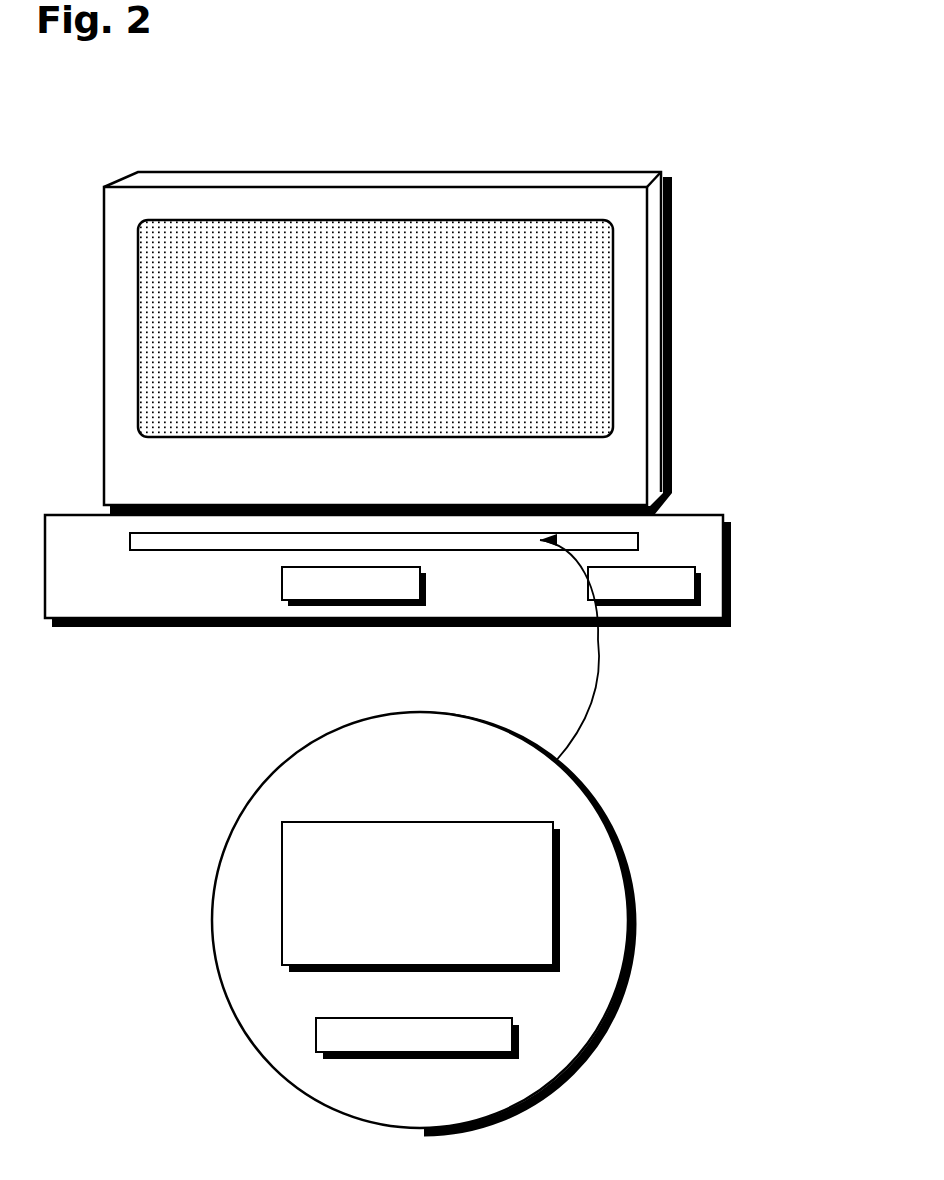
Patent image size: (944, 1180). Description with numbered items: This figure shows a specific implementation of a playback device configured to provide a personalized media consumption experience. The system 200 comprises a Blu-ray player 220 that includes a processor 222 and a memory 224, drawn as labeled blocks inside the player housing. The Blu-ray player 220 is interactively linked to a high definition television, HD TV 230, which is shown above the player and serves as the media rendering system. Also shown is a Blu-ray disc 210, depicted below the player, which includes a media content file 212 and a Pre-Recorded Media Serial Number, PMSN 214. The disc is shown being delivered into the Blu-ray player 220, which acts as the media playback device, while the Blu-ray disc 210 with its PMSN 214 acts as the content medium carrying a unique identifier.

The system 200 is at (786, 76).
The high definition television (HD TV) 230 is at (470, 172).
The Blu-ray player 220 is at (731, 567).
The processor 222 is at (427, 585).
The memory 224 is at (661, 566).
The Blu-ray disc 210 is at (214, 908).
The media content file 212 is at (421, 897).
The Pre-Recorded Media Serial Number (PMSN) 214 is at (417, 1038).